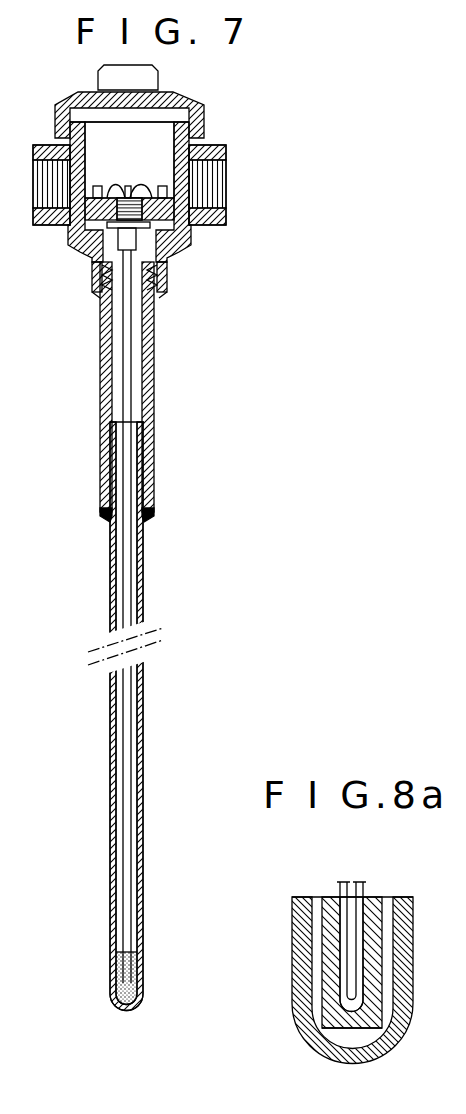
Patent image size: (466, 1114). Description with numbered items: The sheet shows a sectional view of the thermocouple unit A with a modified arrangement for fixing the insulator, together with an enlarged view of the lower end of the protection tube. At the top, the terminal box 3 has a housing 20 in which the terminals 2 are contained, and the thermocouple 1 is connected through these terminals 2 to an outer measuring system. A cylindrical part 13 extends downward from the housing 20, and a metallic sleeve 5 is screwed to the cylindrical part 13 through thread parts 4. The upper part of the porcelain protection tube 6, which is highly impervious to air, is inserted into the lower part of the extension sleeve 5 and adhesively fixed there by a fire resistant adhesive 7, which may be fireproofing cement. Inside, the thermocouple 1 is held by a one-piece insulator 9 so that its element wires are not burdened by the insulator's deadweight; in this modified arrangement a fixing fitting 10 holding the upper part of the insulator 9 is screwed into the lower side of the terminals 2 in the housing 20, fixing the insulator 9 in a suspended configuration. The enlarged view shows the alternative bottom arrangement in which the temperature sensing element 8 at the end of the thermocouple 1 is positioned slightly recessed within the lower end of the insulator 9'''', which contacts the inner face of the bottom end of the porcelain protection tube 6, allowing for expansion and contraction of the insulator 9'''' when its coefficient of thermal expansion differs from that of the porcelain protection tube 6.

In FIG. 7, the thermocouple 1 is at (128, 190).
In FIG. 8a, the thermocouple 1 is at (364, 882).
In FIG. 7, the terminals 2 is at (150, 208).
In FIG. 7, the terminal box 3 is at (211, 118).
In FIG. 7, the thread parts 4 is at (150, 278).
In FIG. 7, the metallic sleeve 5 is at (154, 368).
In FIG. 7, the porcelain protection tube 6 is at (144, 600).
In FIG. 8a, the porcelain protection tube 6 is at (292, 939).
In FIG. 7, the fire resistant adhesive 7 is at (150, 516).
In FIG. 7, the temperature sensing element 8 is at (144, 977).
In FIG. 8a, the temperature sensing element 8 is at (352, 1010).
In FIG. 7, the insulator 9 is at (101, 602).
In FIG. 8a, the insulator 9'''' is at (309, 962).
In FIG. 7, the fixing fitting 10 is at (90, 230).
In FIG. 7, the cylindrical part 13 is at (93, 283).
In FIG. 7, the housing 20 is at (196, 238).
In FIG. 7, the thermocouple unit A is at (198, 323).